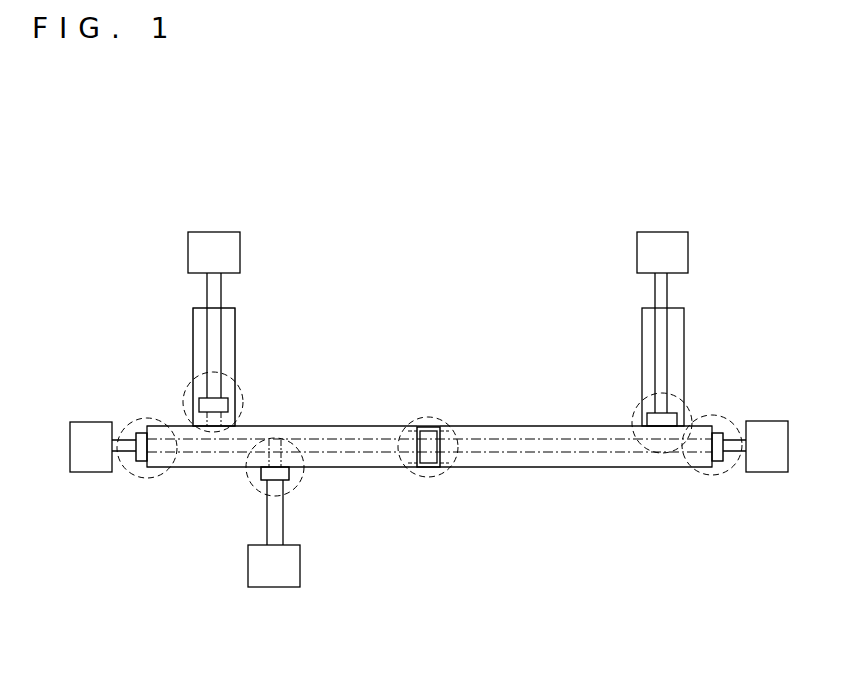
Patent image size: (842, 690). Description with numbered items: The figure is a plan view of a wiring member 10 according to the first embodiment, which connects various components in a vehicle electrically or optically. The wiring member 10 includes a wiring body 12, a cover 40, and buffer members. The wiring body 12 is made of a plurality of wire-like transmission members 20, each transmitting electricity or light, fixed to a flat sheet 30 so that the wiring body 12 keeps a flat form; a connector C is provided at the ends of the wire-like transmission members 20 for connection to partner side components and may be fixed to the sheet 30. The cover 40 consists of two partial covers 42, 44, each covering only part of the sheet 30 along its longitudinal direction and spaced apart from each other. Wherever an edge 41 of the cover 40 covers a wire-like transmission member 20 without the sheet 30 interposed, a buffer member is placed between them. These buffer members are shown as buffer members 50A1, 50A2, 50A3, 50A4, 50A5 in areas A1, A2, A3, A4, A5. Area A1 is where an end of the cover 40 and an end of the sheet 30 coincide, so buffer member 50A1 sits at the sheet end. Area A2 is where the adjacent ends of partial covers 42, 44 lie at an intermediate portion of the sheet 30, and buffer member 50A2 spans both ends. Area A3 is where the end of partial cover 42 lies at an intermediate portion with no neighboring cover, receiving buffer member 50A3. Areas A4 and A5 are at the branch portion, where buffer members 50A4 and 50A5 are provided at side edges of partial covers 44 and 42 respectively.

The wiring member 10 is at (116, 171).
The wiring body 12 is at (269, 349).
The wire-like transmission member 20 is at (208, 372).
The sheet 30 is at (236, 314).
The cover 40 is at (429, 503).
The edge of the cover 41 is at (147, 433).
The partial cover 42 is at (382, 468).
The partial cover 44 is at (576, 483).
The buffer member 50A1 is at (140, 430).
The buffer member 50A2 is at (440, 427).
The buffer member 50A3 is at (200, 403).
The buffer member 50A4 is at (684, 396).
The buffer member 50A5 is at (262, 480).
The area A1 is at (147, 478).
The area A2 is at (428, 417).
The area A3 is at (242, 397).
The area A4 is at (635, 418).
The area A5 is at (302, 492).
The connector C is at (217, 243).